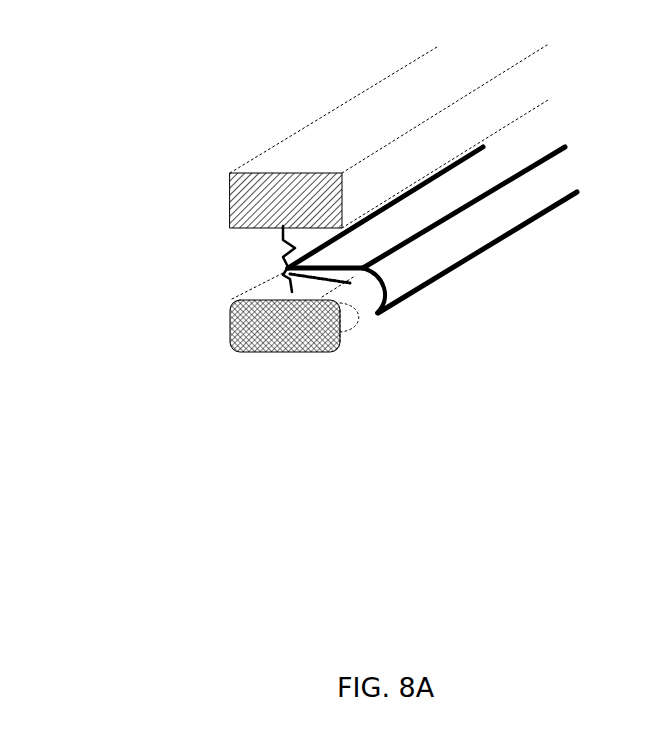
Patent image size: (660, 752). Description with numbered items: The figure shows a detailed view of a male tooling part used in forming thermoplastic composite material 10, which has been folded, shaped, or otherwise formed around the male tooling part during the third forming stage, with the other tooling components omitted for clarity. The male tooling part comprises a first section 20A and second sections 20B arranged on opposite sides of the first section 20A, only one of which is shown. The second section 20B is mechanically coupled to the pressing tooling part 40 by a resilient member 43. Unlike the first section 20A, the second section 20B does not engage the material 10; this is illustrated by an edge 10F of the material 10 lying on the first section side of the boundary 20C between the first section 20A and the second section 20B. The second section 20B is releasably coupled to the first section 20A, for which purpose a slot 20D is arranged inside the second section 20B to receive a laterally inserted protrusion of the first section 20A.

The thermoplastic composite material 10 is at (468, 217).
The edge of material 10F is at (420, 312).
The first section 20A is at (365, 283).
The second section 20B is at (366, 306).
The boundary 20C is at (282, 282).
The slot 20D is at (343, 331).
The pressing tooling part 40 is at (372, 130).
The resilient member 43 is at (283, 263).